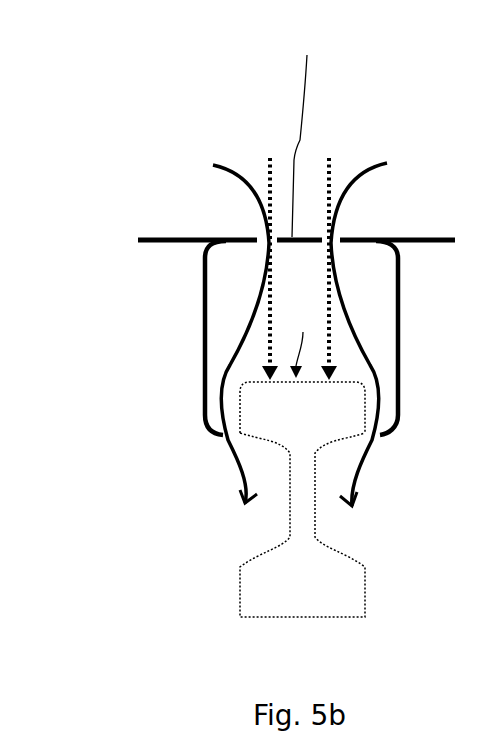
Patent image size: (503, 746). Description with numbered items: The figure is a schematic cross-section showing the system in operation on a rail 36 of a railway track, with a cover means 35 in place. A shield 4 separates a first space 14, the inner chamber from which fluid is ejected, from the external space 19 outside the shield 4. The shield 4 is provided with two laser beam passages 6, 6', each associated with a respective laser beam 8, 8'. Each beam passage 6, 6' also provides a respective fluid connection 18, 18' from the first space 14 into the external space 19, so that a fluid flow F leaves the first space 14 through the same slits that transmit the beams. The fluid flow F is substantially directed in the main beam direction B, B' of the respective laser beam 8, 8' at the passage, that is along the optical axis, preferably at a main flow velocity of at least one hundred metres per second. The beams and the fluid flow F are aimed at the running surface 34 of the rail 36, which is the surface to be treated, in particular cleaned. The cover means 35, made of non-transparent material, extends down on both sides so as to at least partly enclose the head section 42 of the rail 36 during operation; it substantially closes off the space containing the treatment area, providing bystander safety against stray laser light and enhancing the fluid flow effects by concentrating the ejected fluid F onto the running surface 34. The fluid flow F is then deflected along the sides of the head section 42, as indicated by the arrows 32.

The shield 4 is at (310, 136).
The first space 14 is at (212, 124).
The external space 19 is at (246, 312).
The laser beam 8 is at (269, 256).
The main beam direction B is at (269, 256).
The laser beam 8' is at (335, 256).
The main beam direction B' is at (335, 256).
The laser beam passage 6 is at (203, 204).
The fluid connection 18 is at (203, 204).
The laser beam passage 6' is at (399, 203).
The fluid connection 18' is at (399, 203).
The cover means 35 is at (204, 352).
The running surface 34 is at (302, 342).
The deflected flow 32 is at (228, 455).
The fluid flow F is at (302, 515).
The rail 36 is at (307, 492).
The head section 42 is at (350, 406).